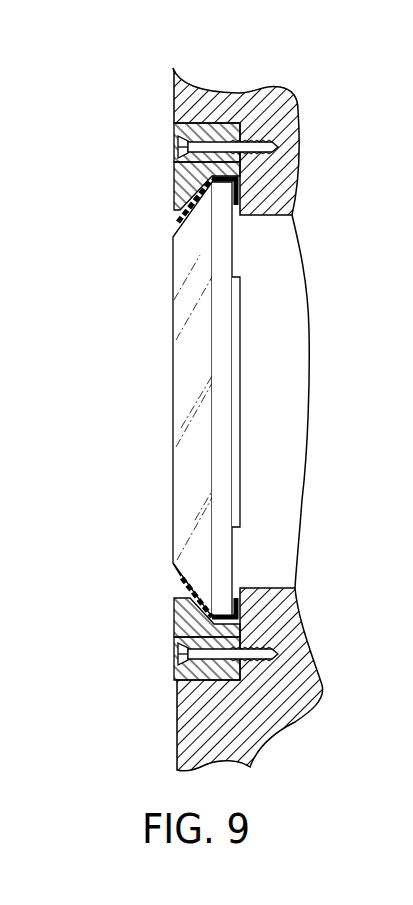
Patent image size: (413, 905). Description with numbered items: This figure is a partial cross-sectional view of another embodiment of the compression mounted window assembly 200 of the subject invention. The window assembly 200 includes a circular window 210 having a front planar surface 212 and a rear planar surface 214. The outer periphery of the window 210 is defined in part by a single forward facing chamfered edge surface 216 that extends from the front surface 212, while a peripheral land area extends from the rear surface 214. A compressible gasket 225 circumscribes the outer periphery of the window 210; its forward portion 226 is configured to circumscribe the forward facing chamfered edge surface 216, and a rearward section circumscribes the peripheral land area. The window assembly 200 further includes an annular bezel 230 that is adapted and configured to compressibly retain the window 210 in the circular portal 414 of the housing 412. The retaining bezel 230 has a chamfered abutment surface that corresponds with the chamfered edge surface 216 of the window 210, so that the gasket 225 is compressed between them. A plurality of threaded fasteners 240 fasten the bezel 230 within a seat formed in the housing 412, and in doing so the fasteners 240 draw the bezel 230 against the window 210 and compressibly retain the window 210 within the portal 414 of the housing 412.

The compressible window assembly 200 is at (152, 73).
The circular window 210 is at (219, 399).
The front planar surface 212 is at (173, 438).
The rear planar surface 214 is at (232, 540).
The forward facing chamfered edge surface 216 is at (127, 582).
The compressible gasket 225 is at (172, 221).
The forward portion of gasket 226 is at (185, 597).
The annular bezel 230 is at (222, 121).
The threaded fastener 240 is at (178, 148).
The housing 412 is at (287, 92).
The circular portal 414 is at (277, 215).